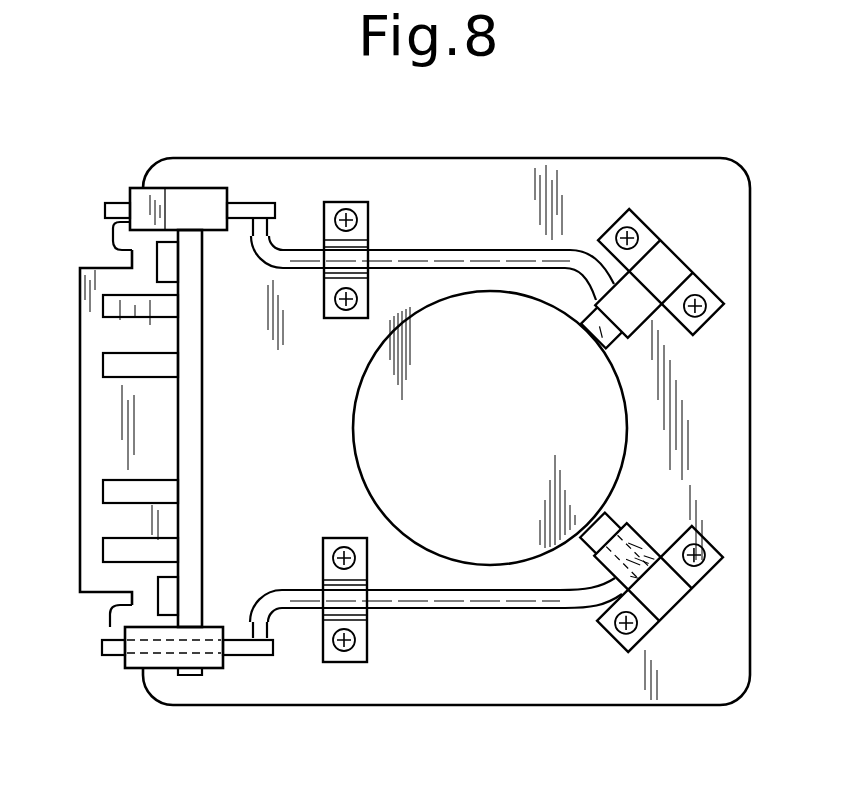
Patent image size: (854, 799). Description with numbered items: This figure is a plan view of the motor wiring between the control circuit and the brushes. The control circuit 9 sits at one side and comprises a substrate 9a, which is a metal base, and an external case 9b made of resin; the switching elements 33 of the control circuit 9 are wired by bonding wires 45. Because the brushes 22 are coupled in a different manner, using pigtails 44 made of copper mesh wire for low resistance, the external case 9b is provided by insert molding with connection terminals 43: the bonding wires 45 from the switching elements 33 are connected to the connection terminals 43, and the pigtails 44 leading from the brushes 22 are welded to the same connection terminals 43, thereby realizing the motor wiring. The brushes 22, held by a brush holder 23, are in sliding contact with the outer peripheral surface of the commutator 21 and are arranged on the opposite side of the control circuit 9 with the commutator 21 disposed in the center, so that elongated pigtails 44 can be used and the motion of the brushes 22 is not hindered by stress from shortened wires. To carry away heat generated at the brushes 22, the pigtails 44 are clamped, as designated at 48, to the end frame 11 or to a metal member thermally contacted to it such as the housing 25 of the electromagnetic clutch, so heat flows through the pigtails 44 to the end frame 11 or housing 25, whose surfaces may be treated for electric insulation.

The control circuit 9 is at (77, 380).
The substrate 9a is at (177, 435).
The external case 9b is at (188, 207).
The end frame 11 is at (446, 461).
The housing 25 is at (512, 703).
The commutator 21 is at (628, 445).
The brushes 22 is at (603, 337).
The brush holder 23 is at (672, 267).
The switching elements 33 is at (167, 598).
The connection terminals 43 is at (120, 208).
The pigtails 44 is at (477, 250).
The bonding wires 45 is at (113, 240).
The clamp 48 is at (348, 662).